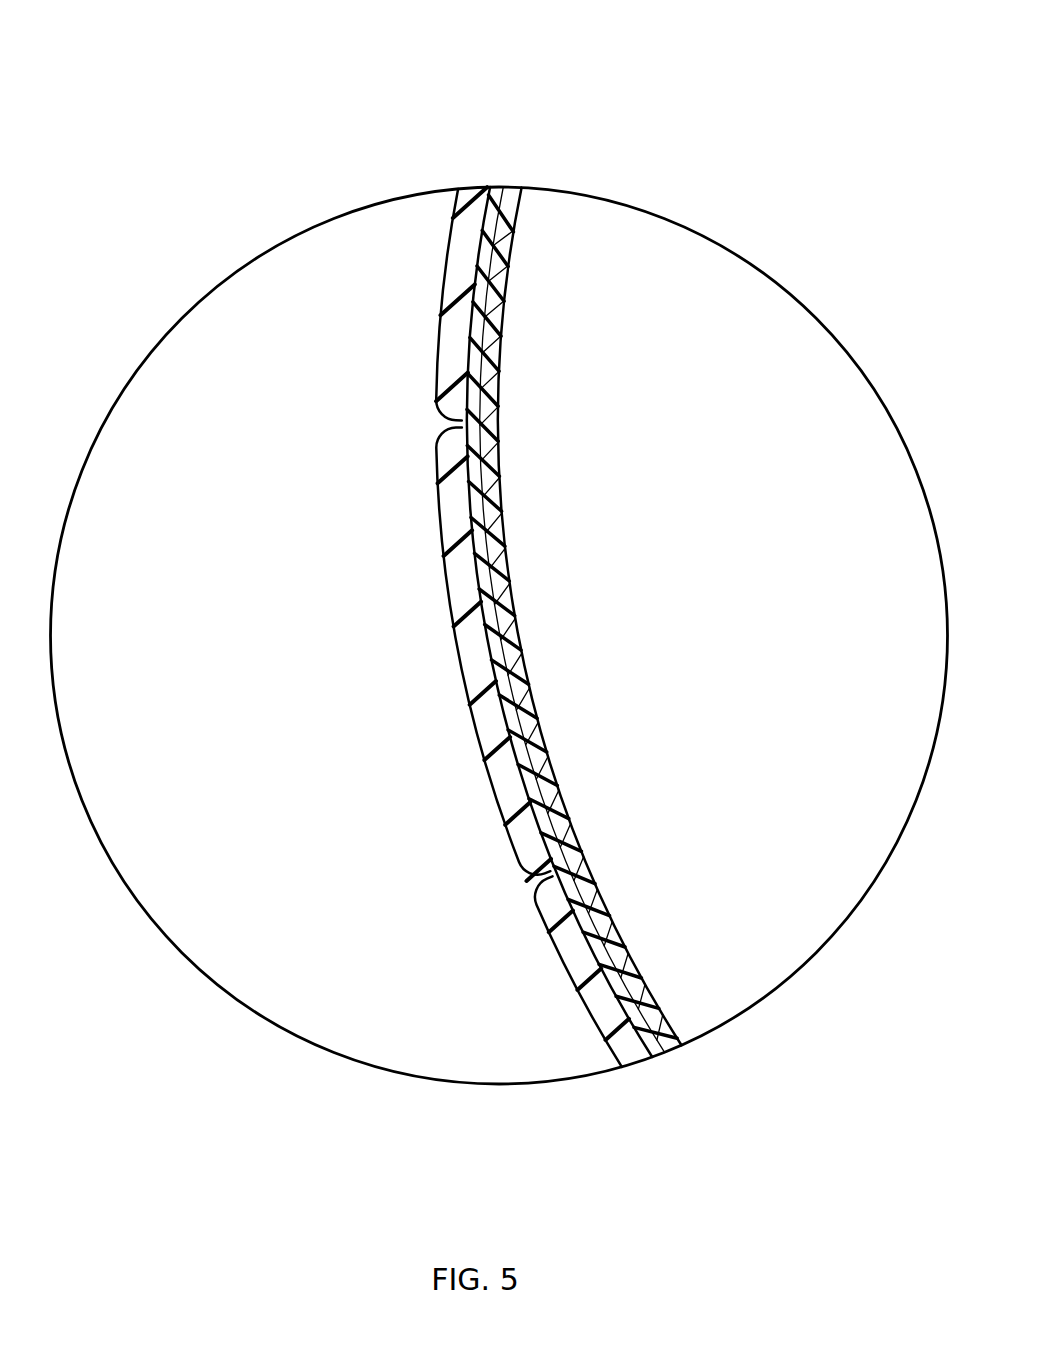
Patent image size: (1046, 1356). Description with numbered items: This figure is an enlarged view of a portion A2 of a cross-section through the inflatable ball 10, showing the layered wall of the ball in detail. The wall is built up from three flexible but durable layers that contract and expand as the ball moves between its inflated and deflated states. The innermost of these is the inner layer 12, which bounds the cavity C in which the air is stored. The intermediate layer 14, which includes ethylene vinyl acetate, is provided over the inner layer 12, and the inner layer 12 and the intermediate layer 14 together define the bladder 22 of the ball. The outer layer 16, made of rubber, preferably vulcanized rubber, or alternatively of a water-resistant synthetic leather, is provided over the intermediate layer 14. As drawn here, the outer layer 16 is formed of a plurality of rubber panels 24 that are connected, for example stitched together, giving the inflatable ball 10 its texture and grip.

The inflatable ball 10 is at (731, 131).
The inner layer 12 is at (514, 186).
The intermediate layer 14 is at (501, 186).
The outer layer 16 is at (458, 590).
The bladder 22 is at (457, 70).
The rubber panels 24 is at (483, 723).
The portion A2 is at (746, 257).
The cavity C is at (807, 435).